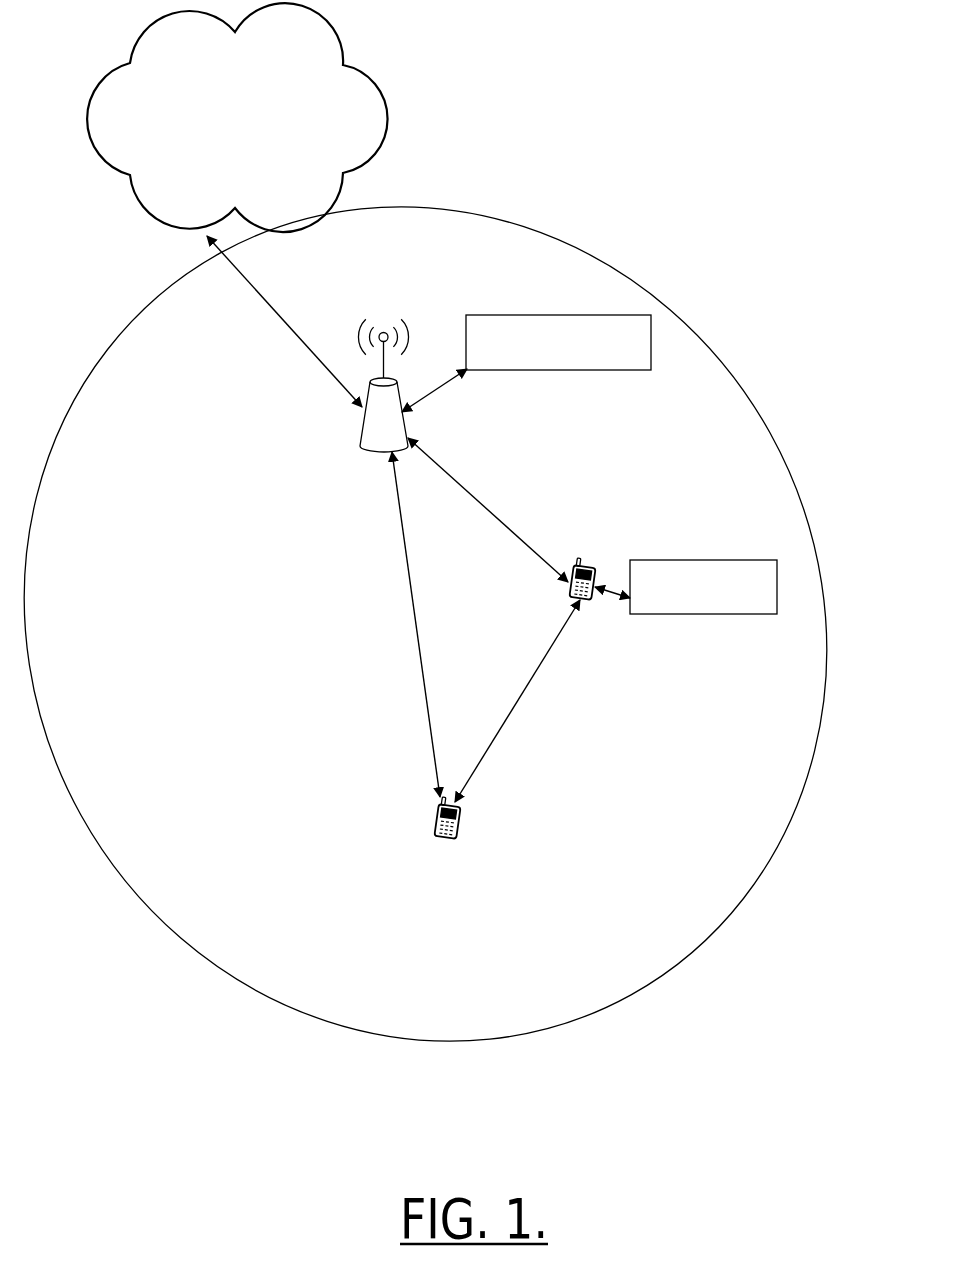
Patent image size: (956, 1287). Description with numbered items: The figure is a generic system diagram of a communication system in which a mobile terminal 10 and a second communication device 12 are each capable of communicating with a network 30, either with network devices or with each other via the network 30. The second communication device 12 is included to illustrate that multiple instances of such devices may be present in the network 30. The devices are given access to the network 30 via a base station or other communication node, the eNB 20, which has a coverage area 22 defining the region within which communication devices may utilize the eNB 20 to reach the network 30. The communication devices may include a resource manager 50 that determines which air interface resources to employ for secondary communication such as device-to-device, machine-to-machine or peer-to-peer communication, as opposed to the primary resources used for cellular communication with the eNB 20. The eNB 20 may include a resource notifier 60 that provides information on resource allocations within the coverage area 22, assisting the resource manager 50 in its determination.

The mobile terminal 10 is at (585, 597).
The second communication device 12 is at (435, 822).
The eNB 20 is at (368, 437).
The coverage area 22 is at (694, 331).
The network 30 is at (377, 78).
The resource manager 50 is at (758, 614).
The resource notifier 60 is at (497, 317).